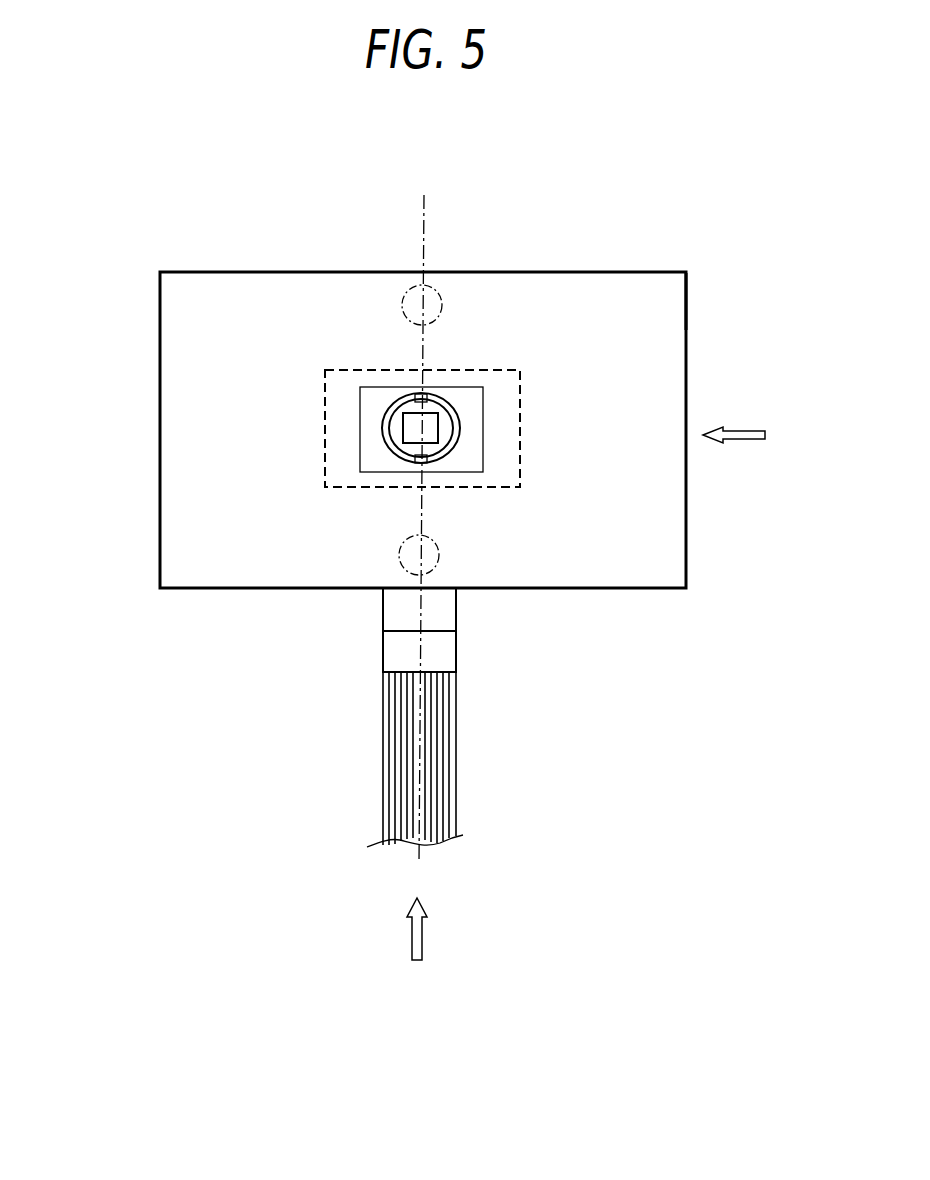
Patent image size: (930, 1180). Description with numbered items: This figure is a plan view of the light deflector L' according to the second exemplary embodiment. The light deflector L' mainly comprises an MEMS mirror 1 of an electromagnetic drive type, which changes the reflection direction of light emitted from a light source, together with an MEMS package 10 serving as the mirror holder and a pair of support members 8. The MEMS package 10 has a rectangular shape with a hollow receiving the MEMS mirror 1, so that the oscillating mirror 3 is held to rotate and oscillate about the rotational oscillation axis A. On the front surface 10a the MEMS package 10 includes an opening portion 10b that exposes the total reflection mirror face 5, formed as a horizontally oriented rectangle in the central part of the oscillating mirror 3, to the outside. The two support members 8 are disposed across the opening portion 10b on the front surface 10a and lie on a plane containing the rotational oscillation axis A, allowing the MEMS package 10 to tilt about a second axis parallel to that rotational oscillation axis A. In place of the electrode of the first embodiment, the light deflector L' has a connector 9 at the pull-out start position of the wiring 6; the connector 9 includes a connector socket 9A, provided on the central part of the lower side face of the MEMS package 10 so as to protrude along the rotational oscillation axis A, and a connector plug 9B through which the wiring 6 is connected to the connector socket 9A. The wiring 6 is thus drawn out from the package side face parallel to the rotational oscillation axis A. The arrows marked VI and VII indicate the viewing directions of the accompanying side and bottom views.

The MEMS mirror 1 is at (321, 430).
The oscillating mirror 3 is at (383, 438).
The total reflection mirror face 5 is at (440, 430).
The wiring 6 is at (457, 754).
The support member 8 is at (403, 298).
The connector 9 is at (247, 682).
The connector socket 9A is at (383, 617).
The connector plug 9B is at (383, 655).
The MEMS package 10 is at (158, 402).
The front surface 10a is at (670, 313).
The opening portion 10b is at (481, 408).
The rotational oscillation axis A is at (425, 231).
The light deflector L' is at (626, 223).
The section arrow VI is at (414, 953).
The section arrow VII is at (756, 436).